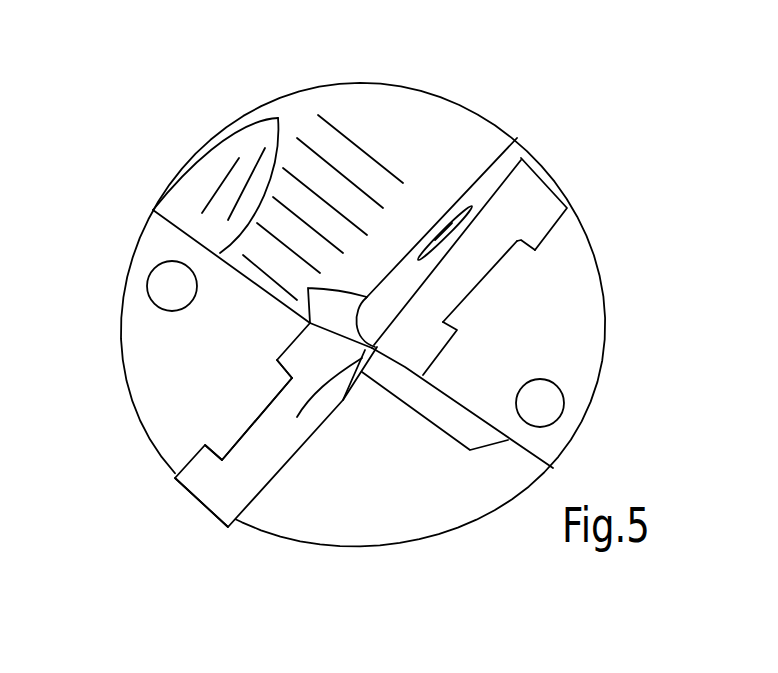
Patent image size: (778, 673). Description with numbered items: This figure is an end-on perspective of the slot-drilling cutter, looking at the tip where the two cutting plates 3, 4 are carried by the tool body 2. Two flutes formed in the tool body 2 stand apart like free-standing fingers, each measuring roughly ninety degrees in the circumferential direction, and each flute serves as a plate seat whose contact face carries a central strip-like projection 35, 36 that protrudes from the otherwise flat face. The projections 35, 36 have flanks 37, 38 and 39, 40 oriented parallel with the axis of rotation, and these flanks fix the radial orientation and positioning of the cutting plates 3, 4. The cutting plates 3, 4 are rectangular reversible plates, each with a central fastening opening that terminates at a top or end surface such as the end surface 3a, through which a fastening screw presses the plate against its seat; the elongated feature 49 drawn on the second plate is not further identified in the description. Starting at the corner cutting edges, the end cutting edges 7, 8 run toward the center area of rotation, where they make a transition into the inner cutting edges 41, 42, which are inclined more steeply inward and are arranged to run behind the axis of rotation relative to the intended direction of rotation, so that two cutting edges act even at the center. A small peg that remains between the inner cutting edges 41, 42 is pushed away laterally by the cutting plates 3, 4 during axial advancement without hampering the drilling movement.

The tool body 2 is at (463, 130).
The cutting plate 3 is at (213, 490).
The end surface 3a is at (296, 452).
The cutting plate 4 is at (515, 218).
The end cutting edge 7 is at (232, 528).
The end cutting edge 8 is at (481, 187).
The strip-like projection 35 is at (242, 422).
The strip-like projection 36 is at (490, 280).
The flank 37 is at (211, 445).
The flank 38 is at (279, 380).
The flank 39 is at (458, 323).
The flank 40 is at (522, 242).
The inner cutting edge 41 is at (297, 417).
The inner cutting edge 42 is at (440, 320).
The elongated slot 49 is at (503, 165).